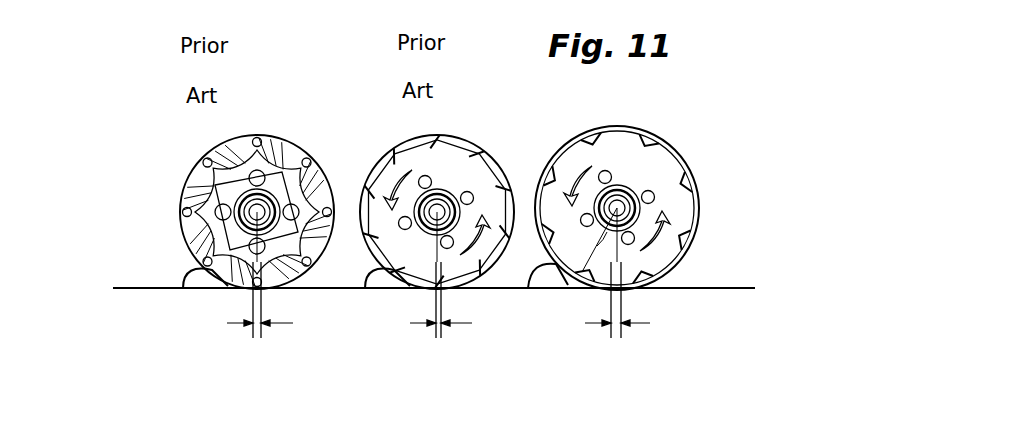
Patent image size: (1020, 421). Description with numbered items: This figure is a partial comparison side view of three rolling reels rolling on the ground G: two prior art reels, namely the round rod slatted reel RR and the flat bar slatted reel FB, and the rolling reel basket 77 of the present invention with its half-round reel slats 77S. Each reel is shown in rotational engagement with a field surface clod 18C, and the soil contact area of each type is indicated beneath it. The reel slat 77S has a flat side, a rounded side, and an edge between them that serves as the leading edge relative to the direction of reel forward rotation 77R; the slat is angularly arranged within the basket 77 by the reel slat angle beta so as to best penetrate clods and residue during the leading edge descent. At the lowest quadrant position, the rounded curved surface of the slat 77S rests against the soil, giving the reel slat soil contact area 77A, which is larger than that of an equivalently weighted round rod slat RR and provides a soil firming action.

The prior art round rod slat RR is at (180, 212).
The prior art flat bar slat FB is at (372, 150).
The rolling reel basket 77 is at (668, 227).
The reel forward rotation 77R is at (570, 167).
The reel slat 77S is at (695, 218).
The reel slat soil contact area at lowest quadrant position 77A is at (650, 323).
The ground G is at (714, 289).
The field surface clod 18C is at (205, 289).